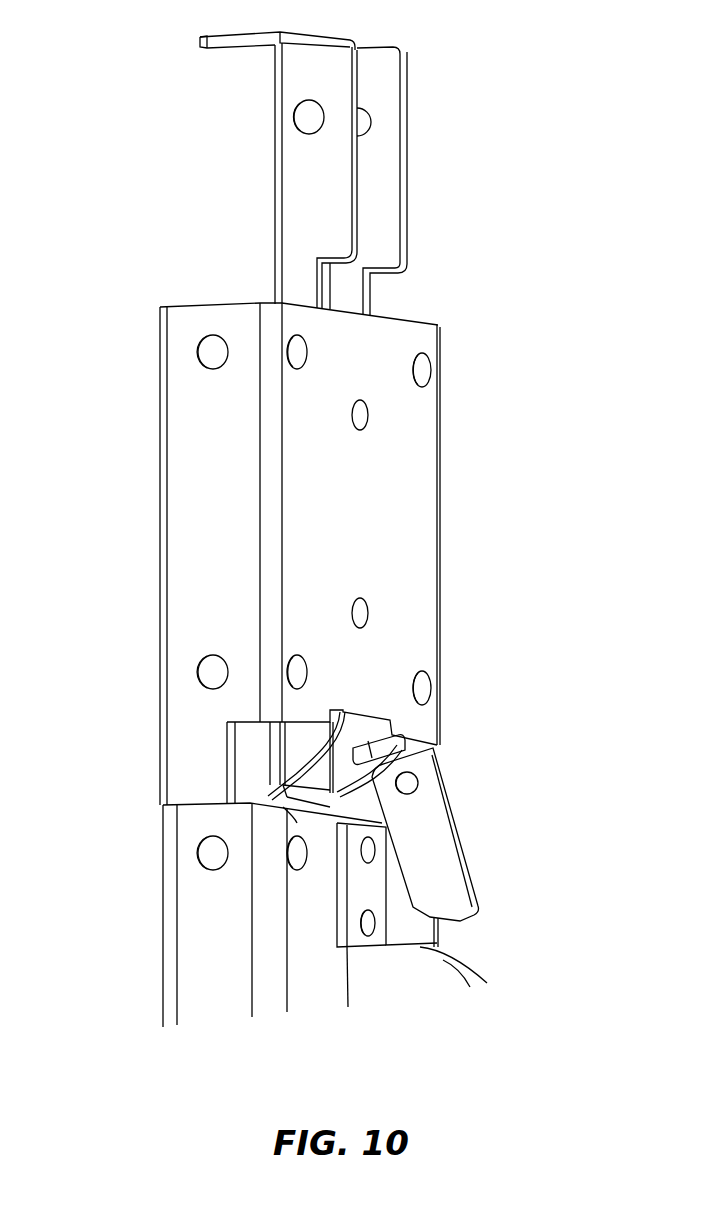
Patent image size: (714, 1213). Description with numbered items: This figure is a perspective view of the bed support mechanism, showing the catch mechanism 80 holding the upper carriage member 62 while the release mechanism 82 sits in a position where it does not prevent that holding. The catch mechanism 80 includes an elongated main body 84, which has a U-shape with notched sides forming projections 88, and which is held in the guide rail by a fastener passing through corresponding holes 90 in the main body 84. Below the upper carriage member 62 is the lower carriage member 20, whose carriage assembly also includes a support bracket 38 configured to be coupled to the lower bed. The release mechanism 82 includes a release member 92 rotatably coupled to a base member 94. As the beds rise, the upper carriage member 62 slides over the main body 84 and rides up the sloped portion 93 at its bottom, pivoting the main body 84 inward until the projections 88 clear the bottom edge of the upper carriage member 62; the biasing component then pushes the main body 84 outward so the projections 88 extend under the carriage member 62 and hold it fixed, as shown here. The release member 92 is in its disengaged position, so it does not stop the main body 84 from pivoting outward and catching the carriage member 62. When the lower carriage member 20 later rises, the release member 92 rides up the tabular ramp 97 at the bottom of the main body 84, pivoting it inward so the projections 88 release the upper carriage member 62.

The lower carriage member 20 is at (205, 975).
The support bracket 38 is at (450, 967).
The upper carriage member 62 is at (190, 479).
The catch mechanism 80 is at (258, 147).
The release mechanism 82 is at (455, 791).
The main body 84 is at (295, 213).
The projections 88 is at (343, 712).
The holes 90 is at (303, 118).
The release member 92 is at (437, 836).
The sloped portion 93 is at (295, 763).
The base member 94 is at (353, 900).
The tabular ramp 97 is at (297, 805).